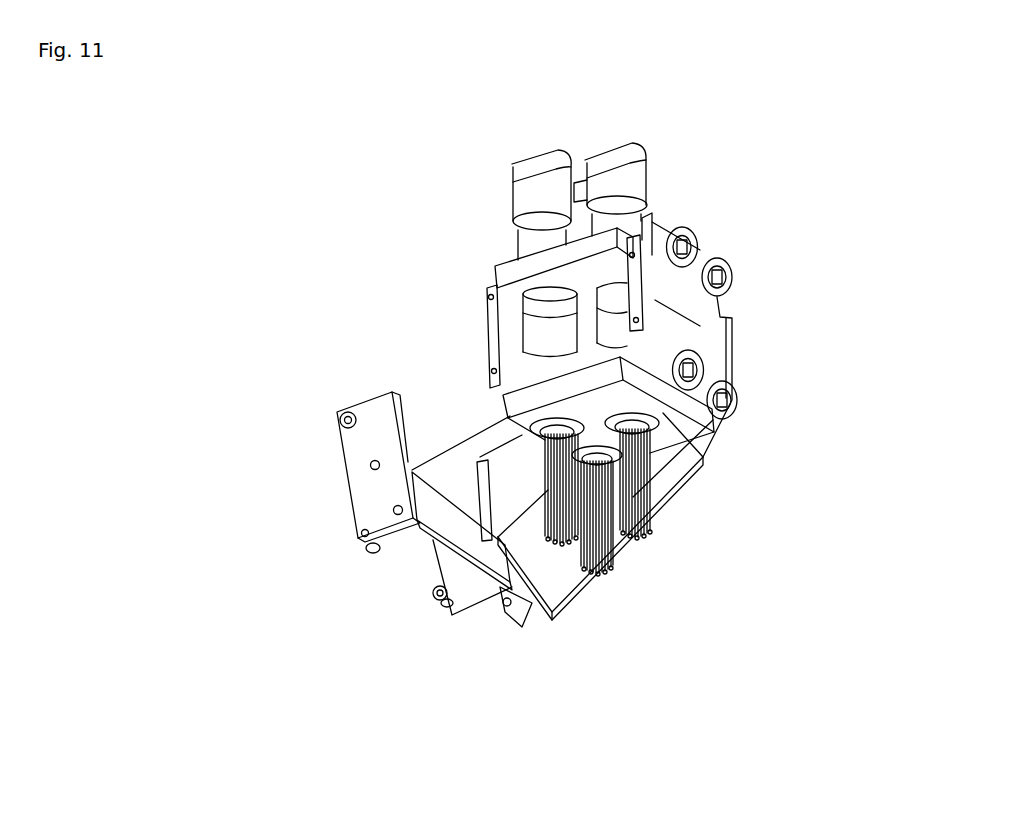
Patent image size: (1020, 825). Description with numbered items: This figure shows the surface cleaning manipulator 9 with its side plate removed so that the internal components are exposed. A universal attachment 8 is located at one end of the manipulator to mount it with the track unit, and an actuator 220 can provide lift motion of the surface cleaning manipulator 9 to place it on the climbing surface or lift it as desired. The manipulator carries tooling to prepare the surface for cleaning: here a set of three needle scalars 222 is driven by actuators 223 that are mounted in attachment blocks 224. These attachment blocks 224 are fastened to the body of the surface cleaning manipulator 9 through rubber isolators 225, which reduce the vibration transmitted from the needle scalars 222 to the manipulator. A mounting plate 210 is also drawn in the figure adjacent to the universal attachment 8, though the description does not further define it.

The universal attachment 8 is at (366, 548).
The surface cleaning manipulator 9 is at (706, 174).
The mounting plate 210 is at (399, 628).
The actuator 220 is at (553, 616).
The needle scalars 222 is at (563, 552).
The actuators 223 is at (528, 148).
The attachment blocks 224 is at (500, 403).
The rubber isolators 225 is at (695, 253).